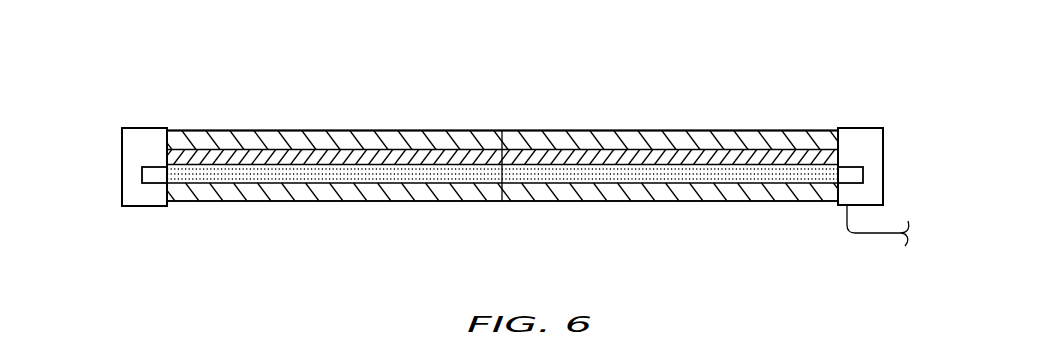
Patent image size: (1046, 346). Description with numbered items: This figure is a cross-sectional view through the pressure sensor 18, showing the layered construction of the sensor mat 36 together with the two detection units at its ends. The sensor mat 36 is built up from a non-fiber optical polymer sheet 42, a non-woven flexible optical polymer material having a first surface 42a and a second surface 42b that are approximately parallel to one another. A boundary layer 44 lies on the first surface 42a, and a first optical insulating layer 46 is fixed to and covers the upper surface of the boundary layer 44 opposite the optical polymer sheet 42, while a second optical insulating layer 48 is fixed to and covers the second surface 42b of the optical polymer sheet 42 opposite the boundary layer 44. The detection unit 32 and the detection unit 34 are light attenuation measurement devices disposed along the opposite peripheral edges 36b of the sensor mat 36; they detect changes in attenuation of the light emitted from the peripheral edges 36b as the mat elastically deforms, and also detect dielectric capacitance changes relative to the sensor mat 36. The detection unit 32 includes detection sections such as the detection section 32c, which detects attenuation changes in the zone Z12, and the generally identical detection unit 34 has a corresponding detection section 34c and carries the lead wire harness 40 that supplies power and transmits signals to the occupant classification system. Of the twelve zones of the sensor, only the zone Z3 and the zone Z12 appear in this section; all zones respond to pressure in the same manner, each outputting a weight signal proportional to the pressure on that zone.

The pressure sensor 18 is at (525, 77).
The detection unit 32 is at (143, 133).
The detection section 32c is at (150, 177).
The detection unit 34 is at (860, 135).
The detection section 34c is at (853, 178).
The sensor mat 36 is at (505, 161).
The peripheral edge 36b is at (165, 158).
The lead wire harness 40 is at (872, 234).
The non-fiber optical polymer sheet 42 is at (343, 172).
The first surface 42a is at (393, 140).
The second surface 42b is at (202, 200).
The boundary layer 44 is at (248, 155).
The first optical insulating layer 46 is at (270, 140).
The second optical insulating layer 48 is at (403, 193).
The zone Z12 is at (323, 131).
The zone Z3 is at (740, 130).